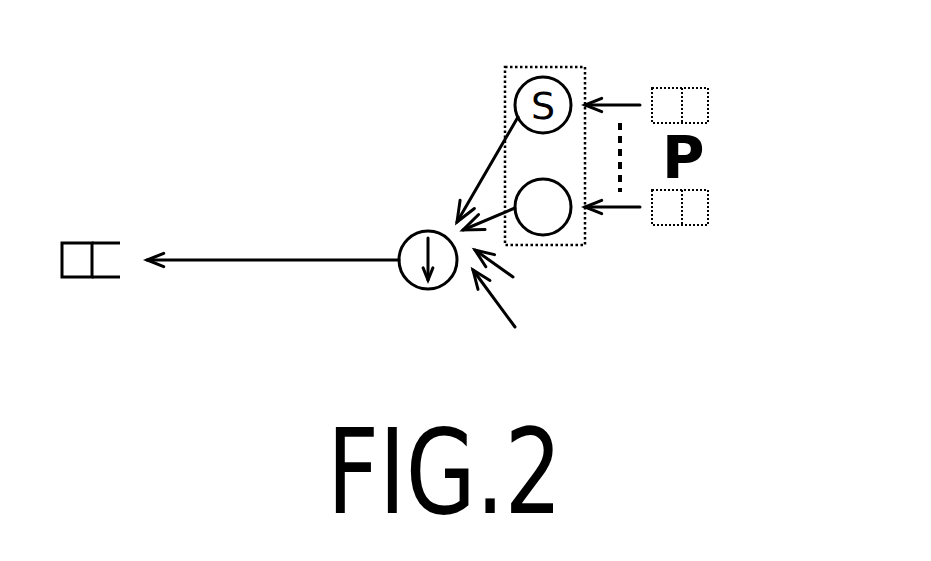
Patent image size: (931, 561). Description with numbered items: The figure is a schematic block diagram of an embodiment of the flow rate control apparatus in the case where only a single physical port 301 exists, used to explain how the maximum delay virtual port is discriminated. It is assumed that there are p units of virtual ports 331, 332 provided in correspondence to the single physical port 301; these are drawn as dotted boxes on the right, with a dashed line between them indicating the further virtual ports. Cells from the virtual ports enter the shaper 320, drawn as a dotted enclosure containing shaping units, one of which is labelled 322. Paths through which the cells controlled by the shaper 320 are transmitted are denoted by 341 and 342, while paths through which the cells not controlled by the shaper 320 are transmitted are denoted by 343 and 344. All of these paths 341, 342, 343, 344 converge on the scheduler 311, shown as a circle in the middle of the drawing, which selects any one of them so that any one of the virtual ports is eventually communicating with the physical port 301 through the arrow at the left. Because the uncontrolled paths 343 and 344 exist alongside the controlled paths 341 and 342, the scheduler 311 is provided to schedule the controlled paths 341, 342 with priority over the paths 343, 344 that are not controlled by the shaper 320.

The physical port 301 is at (72, 243).
The scheduler 311 is at (413, 233).
The shaper 320 is at (542, 67).
The shaper 322 is at (568, 222).
The virtual port 331 is at (698, 87).
The virtual port 332 is at (708, 207).
The path controlled by the shaper 341 is at (490, 215).
The path controlled by the shaper 342 is at (490, 213).
The path not controlled by the shaper 343 is at (520, 278).
The path not controlled by the shaper 344 is at (518, 330).